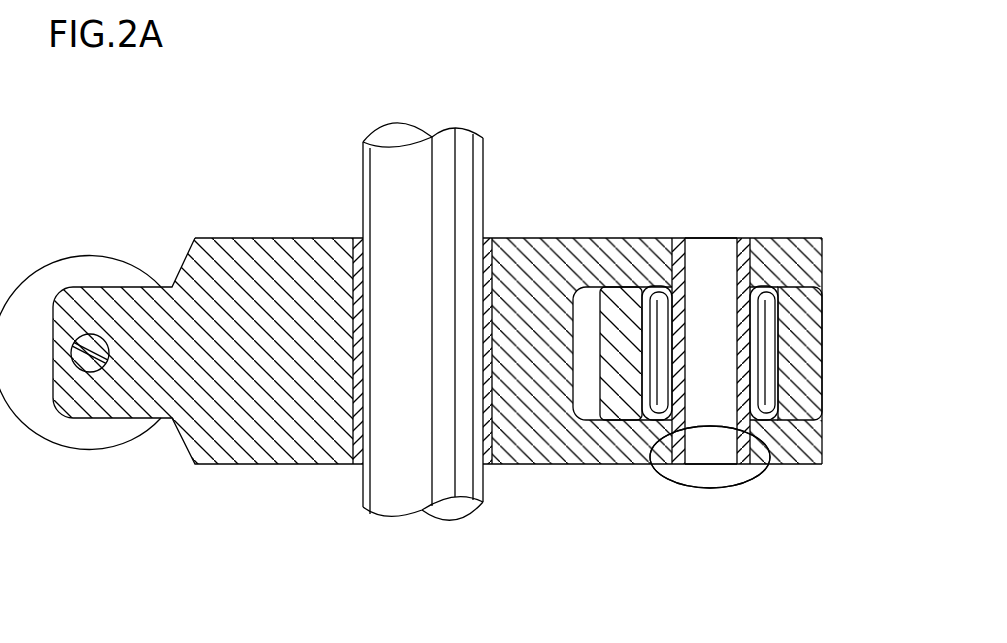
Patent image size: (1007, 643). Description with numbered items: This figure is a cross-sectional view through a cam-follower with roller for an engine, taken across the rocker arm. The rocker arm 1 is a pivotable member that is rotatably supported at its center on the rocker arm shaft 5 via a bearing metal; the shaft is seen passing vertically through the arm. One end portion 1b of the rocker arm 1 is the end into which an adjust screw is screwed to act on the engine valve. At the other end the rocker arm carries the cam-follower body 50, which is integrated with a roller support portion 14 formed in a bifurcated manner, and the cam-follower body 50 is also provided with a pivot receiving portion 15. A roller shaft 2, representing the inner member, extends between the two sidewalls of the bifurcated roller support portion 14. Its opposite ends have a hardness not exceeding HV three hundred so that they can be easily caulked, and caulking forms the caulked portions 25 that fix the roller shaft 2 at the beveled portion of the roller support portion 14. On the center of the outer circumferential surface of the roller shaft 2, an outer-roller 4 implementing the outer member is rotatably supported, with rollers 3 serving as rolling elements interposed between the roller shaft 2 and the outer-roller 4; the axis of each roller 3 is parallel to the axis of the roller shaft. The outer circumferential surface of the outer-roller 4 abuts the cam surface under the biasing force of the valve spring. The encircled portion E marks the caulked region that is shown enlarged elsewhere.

The rocker arm 1 is at (530, 447).
The one end portion of rocker arm 1b is at (833, 225).
The roller shaft 2 is at (742, 247).
The roller 3 is at (770, 253).
The outer-roller 4 is at (800, 315).
The rocker arm shaft 5 is at (450, 142).
The roller support portion 14 is at (612, 253).
The pivot receiving portion 15 is at (668, 240).
The caulked portion 25 is at (667, 224).
The cam-follower body 50 is at (778, 495).
The portion E is at (713, 492).